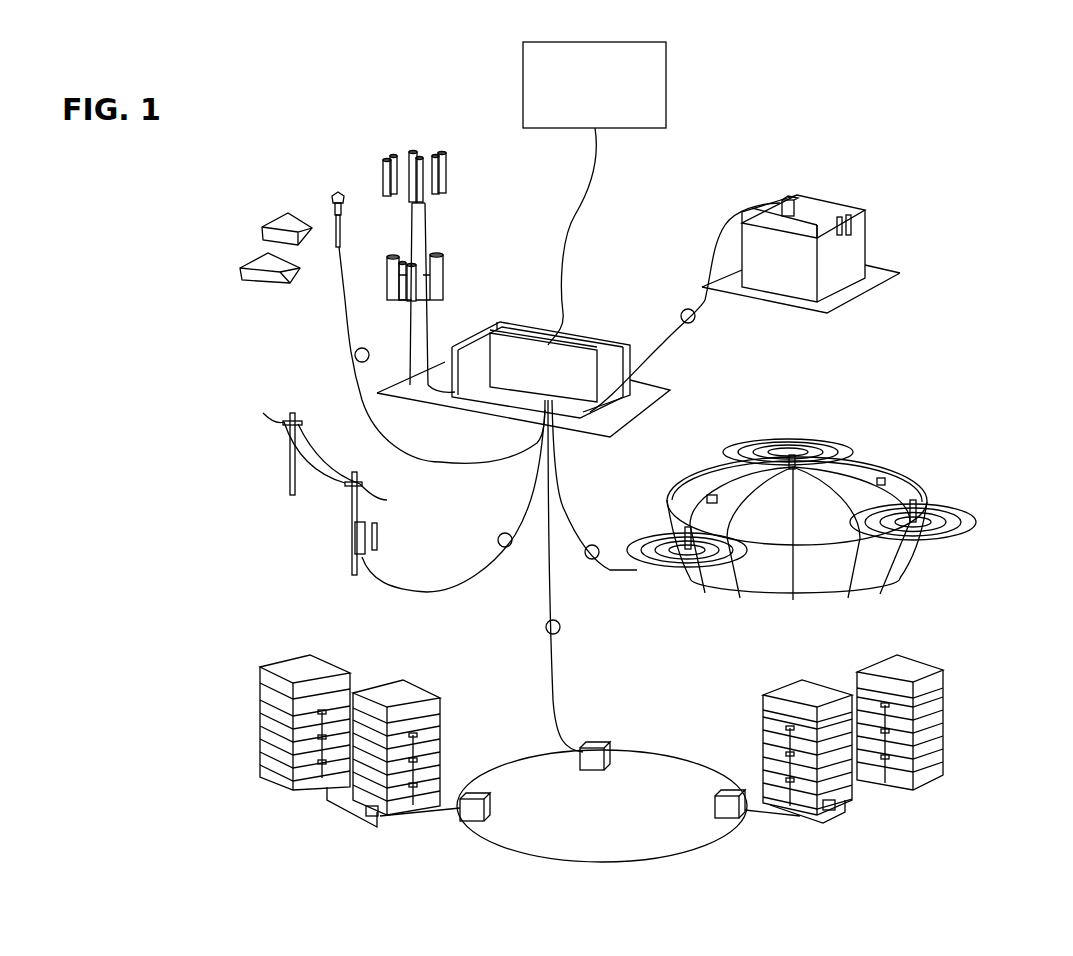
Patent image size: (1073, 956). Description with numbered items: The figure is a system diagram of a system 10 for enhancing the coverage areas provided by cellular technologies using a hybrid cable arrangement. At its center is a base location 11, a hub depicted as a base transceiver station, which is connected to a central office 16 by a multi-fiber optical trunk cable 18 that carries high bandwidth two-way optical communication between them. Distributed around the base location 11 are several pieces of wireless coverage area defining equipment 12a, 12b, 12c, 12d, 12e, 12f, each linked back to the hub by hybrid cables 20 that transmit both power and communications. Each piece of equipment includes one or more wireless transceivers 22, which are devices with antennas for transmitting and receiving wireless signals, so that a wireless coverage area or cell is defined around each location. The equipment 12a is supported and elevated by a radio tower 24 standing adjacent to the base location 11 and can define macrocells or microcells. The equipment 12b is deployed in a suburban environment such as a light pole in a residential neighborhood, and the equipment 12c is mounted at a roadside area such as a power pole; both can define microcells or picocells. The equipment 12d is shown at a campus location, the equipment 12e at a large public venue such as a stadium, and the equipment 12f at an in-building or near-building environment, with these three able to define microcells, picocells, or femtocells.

The system 10 is at (822, 73).
The base location 11 is at (600, 333).
The wireless coverage area defining equipment 12a is at (425, 218).
The wireless coverage area defining equipment 12b is at (337, 207).
The wireless coverage area defining equipment 12c is at (377, 535).
The wireless coverage area defining equipment 12d is at (437, 742).
The wireless coverage area defining equipment 12e is at (710, 495).
The wireless coverage area defining equipment 12f is at (790, 200).
The central office 16 is at (666, 62).
The multi-fiber optical trunk cable 18 is at (570, 210).
The hybrid cables 20 is at (455, 465).
The wireless transceiver 22 is at (440, 268).
The radio tower 24 is at (410, 228).